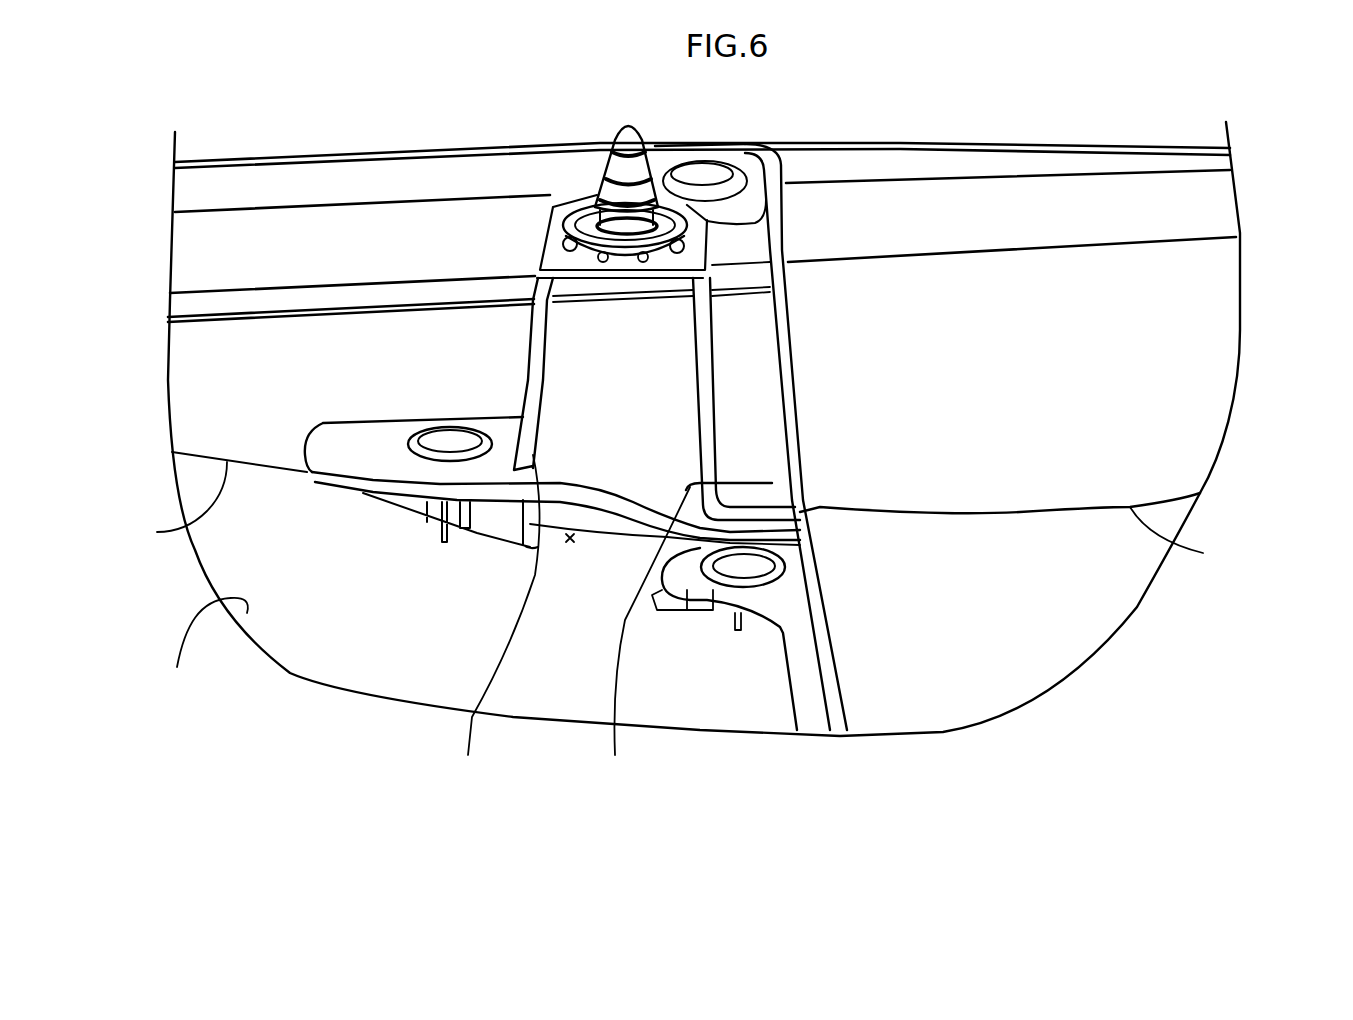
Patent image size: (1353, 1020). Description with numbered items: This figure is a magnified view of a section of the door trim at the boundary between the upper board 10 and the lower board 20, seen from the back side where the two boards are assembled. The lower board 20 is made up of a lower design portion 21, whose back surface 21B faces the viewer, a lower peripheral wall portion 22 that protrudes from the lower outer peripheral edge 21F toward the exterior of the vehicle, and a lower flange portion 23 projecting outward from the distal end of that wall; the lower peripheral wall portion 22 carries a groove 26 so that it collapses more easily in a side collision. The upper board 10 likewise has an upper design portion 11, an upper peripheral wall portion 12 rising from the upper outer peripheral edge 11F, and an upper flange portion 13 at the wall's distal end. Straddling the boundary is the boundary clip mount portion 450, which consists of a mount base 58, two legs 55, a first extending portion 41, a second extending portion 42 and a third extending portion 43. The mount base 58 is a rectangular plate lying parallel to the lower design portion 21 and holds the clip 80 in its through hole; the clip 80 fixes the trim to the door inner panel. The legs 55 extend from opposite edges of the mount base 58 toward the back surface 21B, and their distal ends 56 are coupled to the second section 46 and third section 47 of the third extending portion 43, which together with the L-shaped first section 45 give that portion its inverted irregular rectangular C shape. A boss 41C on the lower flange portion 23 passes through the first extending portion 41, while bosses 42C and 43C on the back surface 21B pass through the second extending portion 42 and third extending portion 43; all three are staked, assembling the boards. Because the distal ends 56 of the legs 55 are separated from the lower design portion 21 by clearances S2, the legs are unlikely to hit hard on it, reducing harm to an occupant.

The upper board 10 is at (1028, 716).
The upper design portion 11 is at (1090, 598).
The upper outer peripheral edge 11F is at (1203, 553).
The upper peripheral wall portion 12 is at (1203, 323).
The upper flange portion 13 is at (1137, 207).
The lower board 20 is at (719, 750).
The lower design portion 21 is at (333, 653).
The back surface 21B is at (201, 650).
The lower outer peripheral edge 21F is at (157, 532).
The lower peripheral wall portion 22 is at (202, 388).
The lower flange portion 23 is at (273, 232).
The groove 26 is at (402, 300).
The first extending portion 41 is at (763, 148).
The boss 41C is at (702, 175).
The second extending portion 42 is at (787, 593).
The boss 42C is at (753, 563).
The third extending portion 43 is at (325, 504).
The boss 43C is at (453, 440).
The first section 45 is at (597, 488).
The second section 46 is at (770, 497).
The third section 47 is at (358, 437).
The legs 55 is at (532, 352).
The distal ends 56 is at (571, 622).
The mount base 58 is at (693, 220).
The clip 80 is at (637, 168).
The boundary clip mount portion 450 is at (569, 181).
The clearances S2 is at (570, 545).